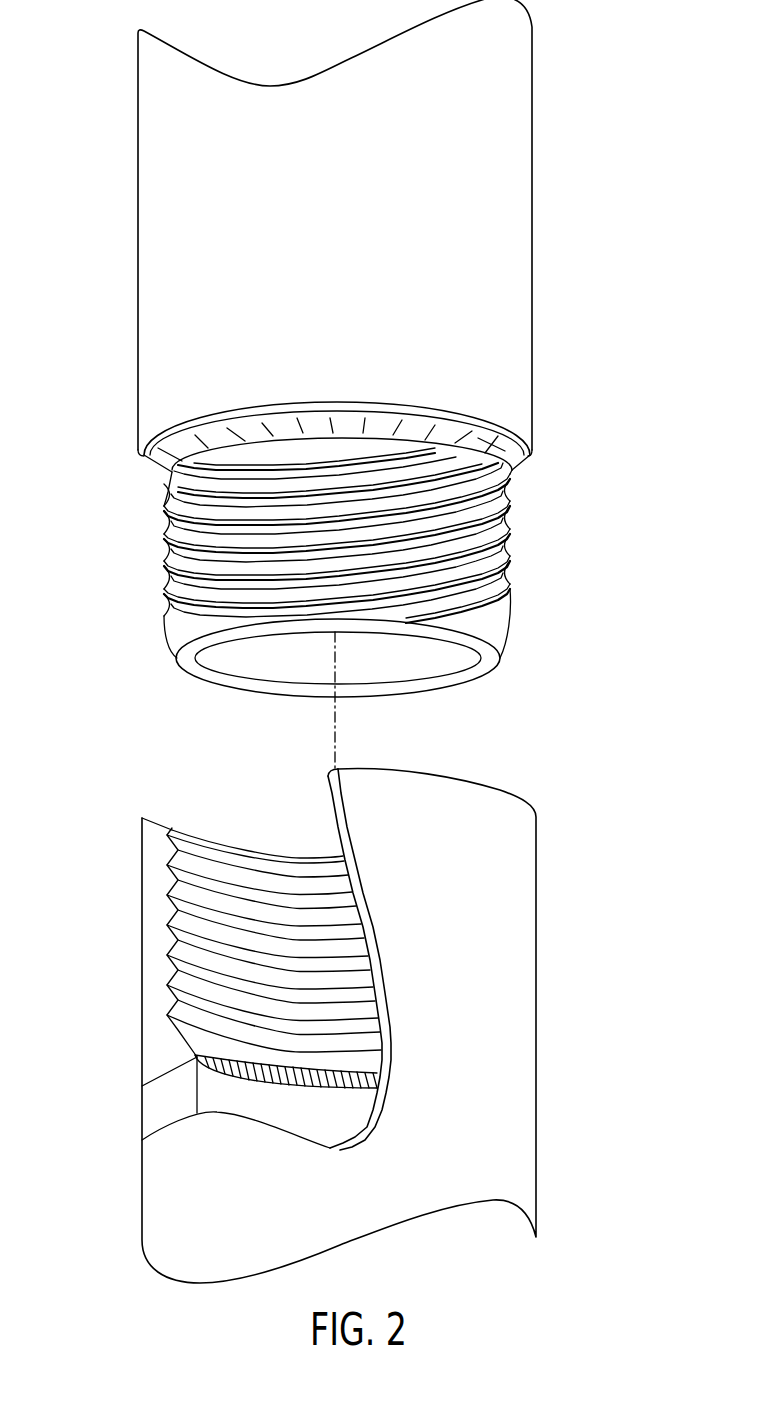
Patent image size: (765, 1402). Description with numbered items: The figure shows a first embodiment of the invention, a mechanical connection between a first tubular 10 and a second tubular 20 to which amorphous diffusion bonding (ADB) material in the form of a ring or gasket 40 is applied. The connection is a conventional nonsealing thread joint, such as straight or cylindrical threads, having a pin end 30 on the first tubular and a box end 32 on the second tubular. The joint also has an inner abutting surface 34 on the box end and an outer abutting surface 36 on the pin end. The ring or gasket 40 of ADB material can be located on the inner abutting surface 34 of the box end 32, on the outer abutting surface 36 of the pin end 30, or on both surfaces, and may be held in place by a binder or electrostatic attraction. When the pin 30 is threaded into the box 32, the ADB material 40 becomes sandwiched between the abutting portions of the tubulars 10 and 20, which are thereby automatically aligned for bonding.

The first tubular 10 is at (332, 226).
The second tubular 20 is at (460, 1171).
The pin end 30 is at (508, 543).
The box end 32 is at (160, 942).
The inner abutting surface 34 is at (200, 667).
The outer abutting surface 36 is at (142, 457).
The ring or gasket of amorphous diffusion bonding material 40 is at (510, 465).